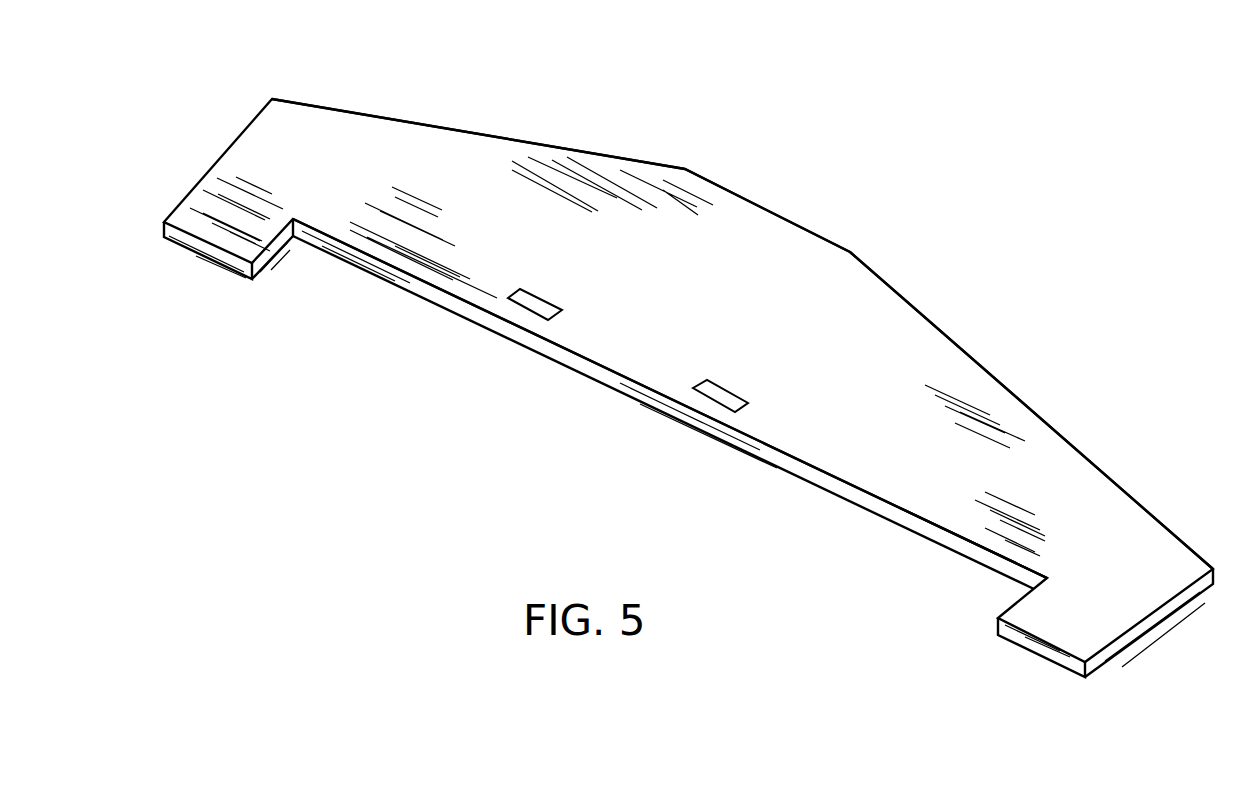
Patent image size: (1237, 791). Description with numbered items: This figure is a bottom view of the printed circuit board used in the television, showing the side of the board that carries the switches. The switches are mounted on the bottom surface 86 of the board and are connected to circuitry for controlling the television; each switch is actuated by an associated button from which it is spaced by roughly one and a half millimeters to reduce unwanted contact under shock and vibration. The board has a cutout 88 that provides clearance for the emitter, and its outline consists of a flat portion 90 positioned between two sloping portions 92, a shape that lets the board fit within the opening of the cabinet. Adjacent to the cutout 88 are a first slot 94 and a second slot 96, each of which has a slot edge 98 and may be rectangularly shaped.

The bottom surface 86 is at (983, 573).
The cutout 88 is at (383, 343).
The flat portion 90 is at (783, 215).
The sloping portions 92 is at (487, 133).
The first slot 94 is at (522, 320).
The second slot 96 is at (703, 422).
The slot edge 98 is at (533, 293).